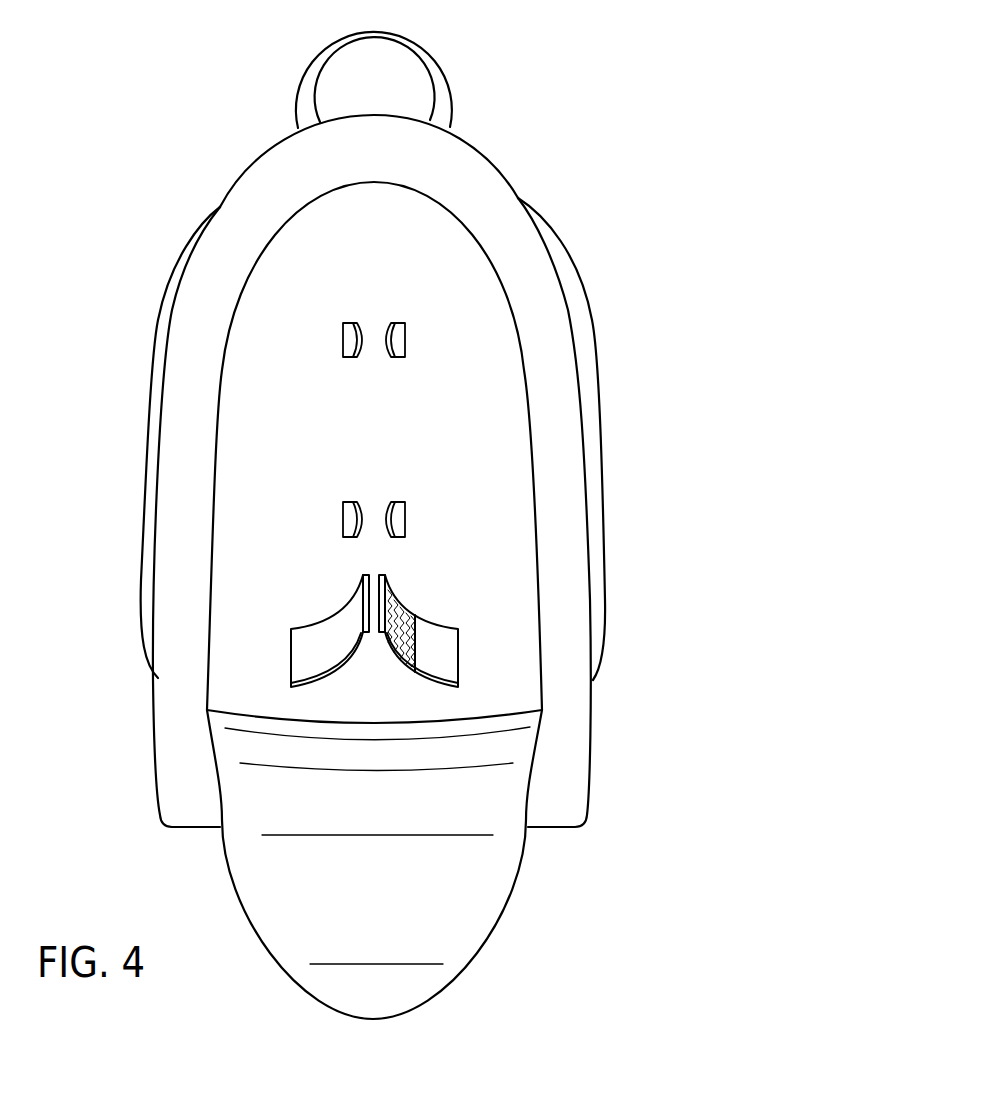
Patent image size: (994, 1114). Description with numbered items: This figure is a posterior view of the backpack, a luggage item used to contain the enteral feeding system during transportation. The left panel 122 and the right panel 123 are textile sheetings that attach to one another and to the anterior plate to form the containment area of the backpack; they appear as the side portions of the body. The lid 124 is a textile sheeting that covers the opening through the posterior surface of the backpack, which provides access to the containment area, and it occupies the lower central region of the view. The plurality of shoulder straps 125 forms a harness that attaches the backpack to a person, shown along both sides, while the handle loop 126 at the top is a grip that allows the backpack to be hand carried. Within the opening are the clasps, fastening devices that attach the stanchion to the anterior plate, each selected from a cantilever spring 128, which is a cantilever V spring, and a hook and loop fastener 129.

The left panel 122 is at (190, 468).
The right panel 123 is at (568, 497).
The lid 124 is at (477, 872).
The plurality of shoulder straps 125 is at (178, 258).
The handle loop 126 is at (442, 88).
The cantilever spring 128 is at (397, 510).
The hook and loop fastener 129 is at (443, 637).